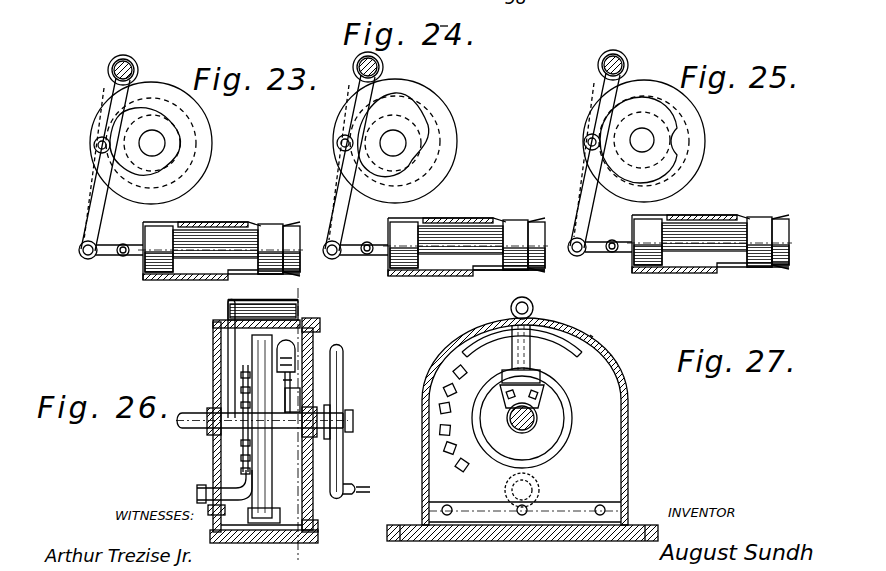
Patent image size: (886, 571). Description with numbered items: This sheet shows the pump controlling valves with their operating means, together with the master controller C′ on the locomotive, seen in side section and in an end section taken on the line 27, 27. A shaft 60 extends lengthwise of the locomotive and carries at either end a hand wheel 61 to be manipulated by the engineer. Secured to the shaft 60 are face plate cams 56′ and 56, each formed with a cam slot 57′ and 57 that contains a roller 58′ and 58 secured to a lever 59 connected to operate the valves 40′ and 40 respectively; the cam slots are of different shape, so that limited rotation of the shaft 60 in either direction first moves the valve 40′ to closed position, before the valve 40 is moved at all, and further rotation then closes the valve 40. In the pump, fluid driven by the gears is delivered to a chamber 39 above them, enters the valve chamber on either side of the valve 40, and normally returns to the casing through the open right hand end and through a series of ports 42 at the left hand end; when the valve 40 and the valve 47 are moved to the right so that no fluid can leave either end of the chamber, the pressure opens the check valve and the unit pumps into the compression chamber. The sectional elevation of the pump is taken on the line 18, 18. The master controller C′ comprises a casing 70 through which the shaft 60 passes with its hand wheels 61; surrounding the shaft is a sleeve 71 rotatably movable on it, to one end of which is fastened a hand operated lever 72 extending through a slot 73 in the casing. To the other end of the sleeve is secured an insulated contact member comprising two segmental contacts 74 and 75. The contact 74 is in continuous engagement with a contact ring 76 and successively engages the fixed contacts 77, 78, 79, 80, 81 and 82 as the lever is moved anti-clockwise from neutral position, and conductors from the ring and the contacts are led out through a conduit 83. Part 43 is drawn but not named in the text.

In FIG. 24, the section line 18 is at (444, 26).
In FIG. 26, the section line 27 is at (308, 426).
In FIG. 24, the chamber 39 is at (522, 277).
In FIG. 24, the valve 40 is at (513, 235).
In FIG. 23, the valve 40′ is at (270, 237).
In FIG. 24, the ports 42 is at (407, 222).
In FIG. 24, the piston end 43 is at (527, 220).
In FIG. 24, the valve 47 is at (400, 242).
In FIG. 24, the face plate cam 56 is at (442, 138).
In FIG. 23, the face plate cam 56′ is at (198, 152).
In FIG. 24, the cam slot 57 is at (407, 110).
In FIG. 23, the cam slot 57′ is at (143, 120).
In FIG. 24, the roller 58 is at (338, 141).
In FIG. 23, the roller 58′ is at (96, 143).
In FIG. 24, the lever 59 is at (335, 202).
In FIG. 23, the shaft 60 is at (155, 143).
In FIG. 24, the shaft 60 is at (395, 143).
In FIG. 25, the shaft 60 is at (644, 140).
In FIG. 26, the shaft 60 is at (202, 420).
In FIG. 27, the shaft 60 is at (522, 430).
In FIG. 26, the hand wheel 61 is at (343, 390).
In FIG. 27, the casing 70 is at (627, 430).
In FIG. 26, the sleeve 71 is at (235, 437).
In FIG. 27, the sleeve 71 is at (530, 423).
In FIG. 26, the hand operated lever 72 is at (235, 348).
In FIG. 27, the hand operated lever 72 is at (520, 332).
In FIG. 26, the slot 73 is at (223, 322).
In FIG. 27, the segmental contact 74 is at (575, 356).
In FIG. 27, the segmental contact 75 is at (542, 378).
In FIG. 27, the contact ring 76 is at (563, 405).
In FIG. 27, the fixed contact 77 is at (460, 374).
In FIG. 27, the fixed contact 78 is at (443, 390).
In FIG. 27, the fixed contact 79 is at (440, 410).
In FIG. 27, the fixed contact 80 is at (440, 432).
In FIG. 27, the fixed contact 81 is at (445, 452).
In FIG. 27, the fixed contact 82 is at (455, 470).
In FIG. 26, the conduit 83 is at (227, 491).
In FIG. 26, the master controller C′ is at (213, 363).
In FIG. 27, the master controller C′ is at (593, 335).